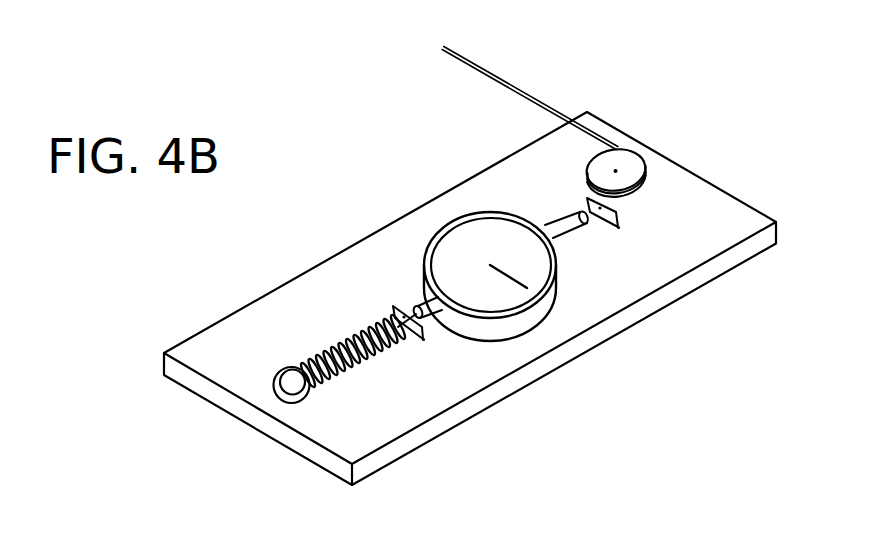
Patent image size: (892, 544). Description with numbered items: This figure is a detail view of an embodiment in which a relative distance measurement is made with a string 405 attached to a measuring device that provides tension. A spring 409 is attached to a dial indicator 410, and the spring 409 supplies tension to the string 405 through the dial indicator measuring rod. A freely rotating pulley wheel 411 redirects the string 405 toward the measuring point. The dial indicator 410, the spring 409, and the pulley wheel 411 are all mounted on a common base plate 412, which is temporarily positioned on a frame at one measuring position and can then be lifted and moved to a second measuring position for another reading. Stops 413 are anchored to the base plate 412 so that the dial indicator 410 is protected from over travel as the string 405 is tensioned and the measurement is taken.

The wire 405 is at (529, 91).
The spring 409 is at (363, 322).
The dial indicator 410 is at (482, 211).
The pulley wheel 411 is at (627, 158).
The base plate 412 is at (462, 408).
The stops 413 is at (424, 338).